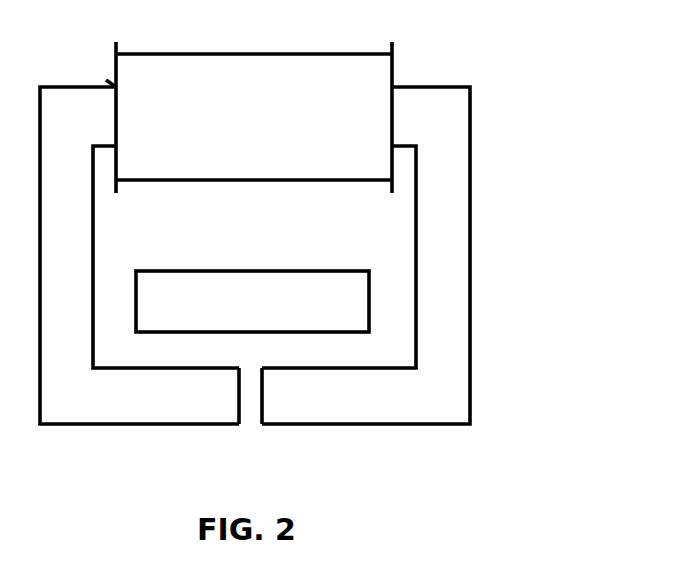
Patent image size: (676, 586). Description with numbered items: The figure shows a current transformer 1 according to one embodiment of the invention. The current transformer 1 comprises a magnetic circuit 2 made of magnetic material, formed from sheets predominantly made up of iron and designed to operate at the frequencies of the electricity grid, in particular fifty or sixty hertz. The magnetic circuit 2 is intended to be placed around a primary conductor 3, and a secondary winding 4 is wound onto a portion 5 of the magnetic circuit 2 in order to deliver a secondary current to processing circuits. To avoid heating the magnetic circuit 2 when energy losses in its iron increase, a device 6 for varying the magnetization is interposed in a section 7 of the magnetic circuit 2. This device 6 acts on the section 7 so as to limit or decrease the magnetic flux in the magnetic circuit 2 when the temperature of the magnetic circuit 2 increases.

The current transformer 1 is at (488, 190).
The magnetic circuit 2 is at (455, 304).
The primary conductor 3 is at (237, 270).
The secondary winding 4 is at (383, 70).
The portion of the magnetic circuit 5 is at (106, 78).
The device for varying the magnetization 6 is at (249, 407).
The section of the magnetic circuit 7 is at (249, 429).